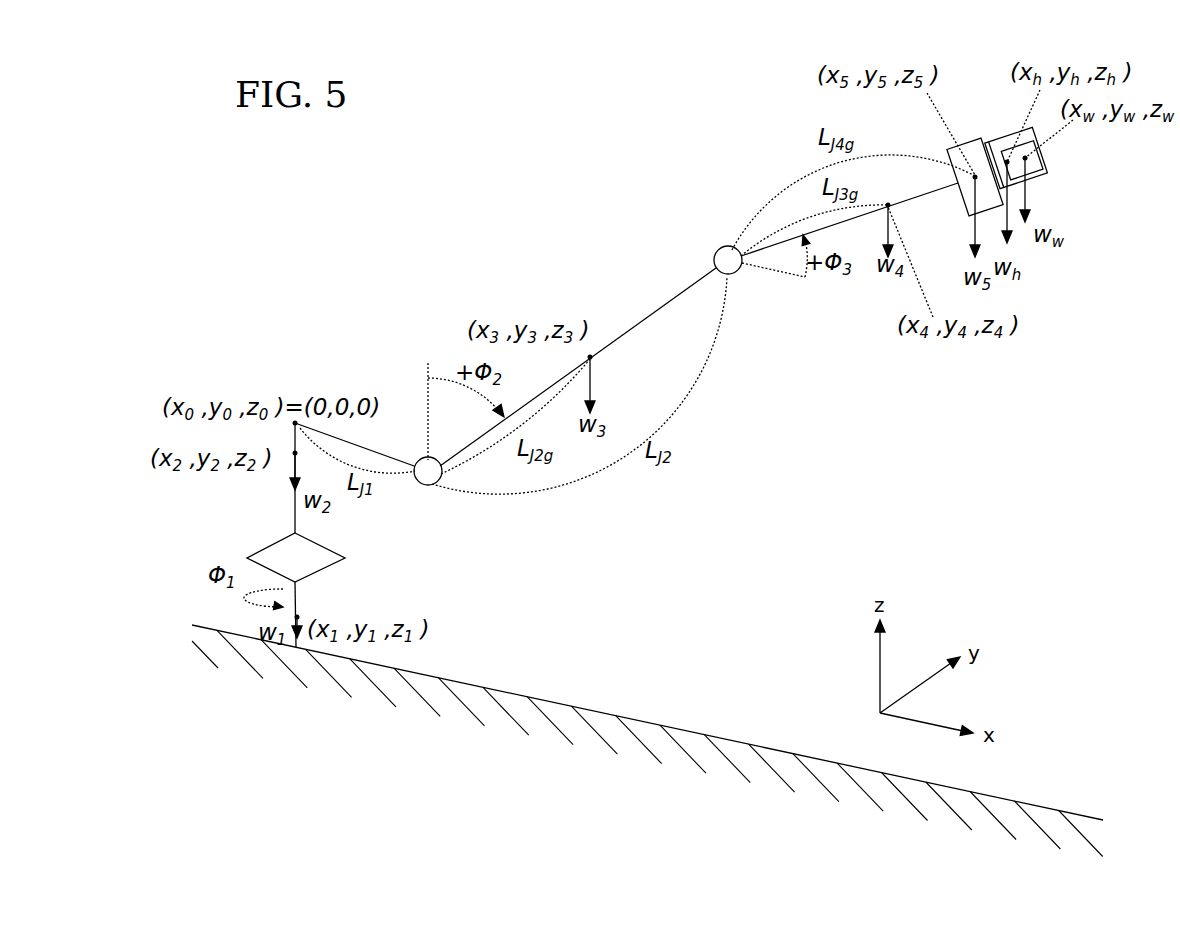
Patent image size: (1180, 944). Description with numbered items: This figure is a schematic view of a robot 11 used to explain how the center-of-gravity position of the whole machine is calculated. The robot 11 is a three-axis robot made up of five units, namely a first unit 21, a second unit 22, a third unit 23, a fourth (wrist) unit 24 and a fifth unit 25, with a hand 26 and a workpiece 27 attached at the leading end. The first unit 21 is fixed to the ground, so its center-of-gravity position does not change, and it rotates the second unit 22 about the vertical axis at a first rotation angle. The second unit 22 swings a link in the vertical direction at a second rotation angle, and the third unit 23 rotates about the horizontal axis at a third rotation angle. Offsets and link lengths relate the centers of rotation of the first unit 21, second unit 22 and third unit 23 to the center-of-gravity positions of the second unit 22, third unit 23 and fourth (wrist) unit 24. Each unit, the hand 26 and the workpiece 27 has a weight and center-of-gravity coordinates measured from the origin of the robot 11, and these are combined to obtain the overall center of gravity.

The robot 11 is at (575, 192).
The first unit 21 is at (298, 593).
The second unit 22 is at (295, 513).
The third unit 23 is at (663, 303).
The fourth (wrist) unit 24 is at (857, 218).
The fifth unit 25 is at (957, 200).
The hand 26 is at (1000, 148).
The workpiece 27 is at (1047, 158).